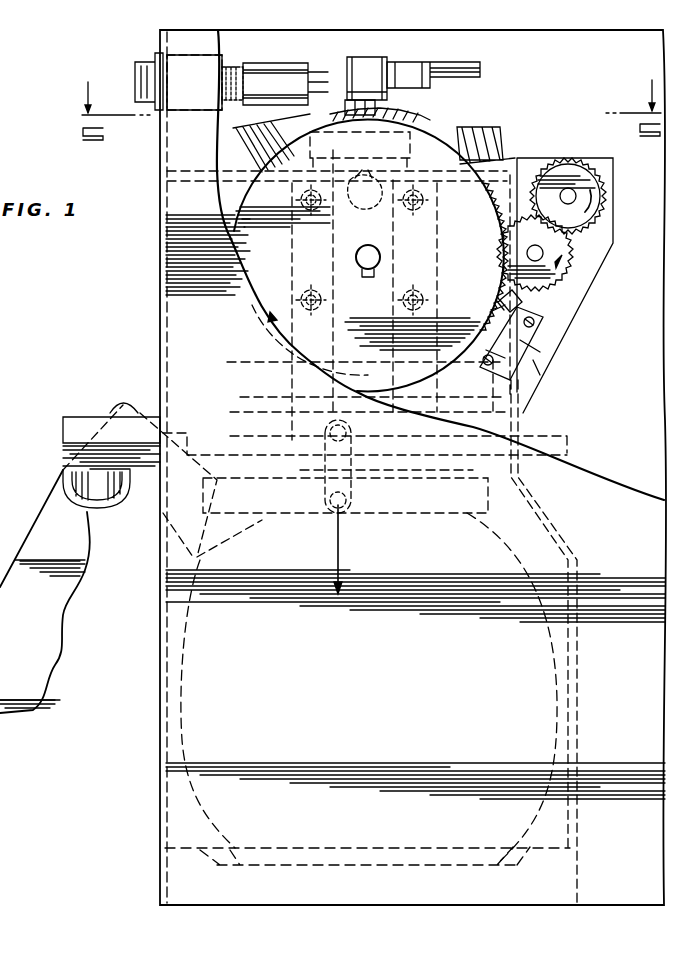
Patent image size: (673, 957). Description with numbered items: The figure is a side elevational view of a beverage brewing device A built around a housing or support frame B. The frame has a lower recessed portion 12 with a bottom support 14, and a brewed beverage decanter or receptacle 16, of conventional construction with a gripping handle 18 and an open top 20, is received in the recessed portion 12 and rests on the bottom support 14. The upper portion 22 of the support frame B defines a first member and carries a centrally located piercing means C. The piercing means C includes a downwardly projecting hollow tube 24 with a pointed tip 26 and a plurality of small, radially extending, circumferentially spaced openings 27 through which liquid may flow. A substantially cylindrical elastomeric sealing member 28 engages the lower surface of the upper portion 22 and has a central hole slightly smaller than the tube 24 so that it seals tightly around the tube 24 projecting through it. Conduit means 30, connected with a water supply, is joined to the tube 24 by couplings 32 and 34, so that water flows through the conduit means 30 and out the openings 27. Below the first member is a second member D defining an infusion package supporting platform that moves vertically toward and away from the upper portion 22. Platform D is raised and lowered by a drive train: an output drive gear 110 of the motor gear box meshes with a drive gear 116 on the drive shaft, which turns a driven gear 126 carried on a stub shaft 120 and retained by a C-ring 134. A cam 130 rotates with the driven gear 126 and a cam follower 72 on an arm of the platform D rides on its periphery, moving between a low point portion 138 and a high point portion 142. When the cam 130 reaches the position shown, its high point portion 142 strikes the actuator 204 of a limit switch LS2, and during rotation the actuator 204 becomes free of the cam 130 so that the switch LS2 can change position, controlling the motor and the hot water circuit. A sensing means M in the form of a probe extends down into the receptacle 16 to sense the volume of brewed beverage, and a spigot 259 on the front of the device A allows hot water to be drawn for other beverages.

The lower recessed portion 12 is at (163, 768).
The bottom support 14 is at (227, 850).
The brewed beverage decanter or receptacle 16 is at (563, 548).
The gripping handle 18 is at (65, 630).
The open top 20 is at (405, 470).
The upper portion 22 is at (490, 128).
The hollow tube 24 is at (403, 176).
The pointed tip 26 is at (298, 196).
The openings 27 is at (350, 206).
The elastomeric sealing member 28 is at (424, 128).
The conduit means 30 is at (475, 62).
The coupling 32 is at (405, 58).
The coupling 34 is at (378, 115).
The cam follower 72 is at (437, 200).
The output drive gear 110 is at (585, 197).
The drive gear 116 is at (572, 262).
The stub shaft 120 is at (381, 258).
The driven gear 126 is at (385, 300).
The cam 130 is at (248, 305).
The C-ring 134 is at (357, 268).
The low point portion 138 is at (407, 207).
The high point portion 142 is at (498, 245).
The actuator 204 is at (507, 305).
The spigot 259 is at (105, 512).
The limit switch LS2 is at (545, 343).
The beverage brewing device A is at (127, 62).
The housing or support frame B is at (154, 182).
The piercing means C is at (348, 168).
The second member / infusion package supporting platform D is at (245, 370).
The sensing means M is at (343, 562).